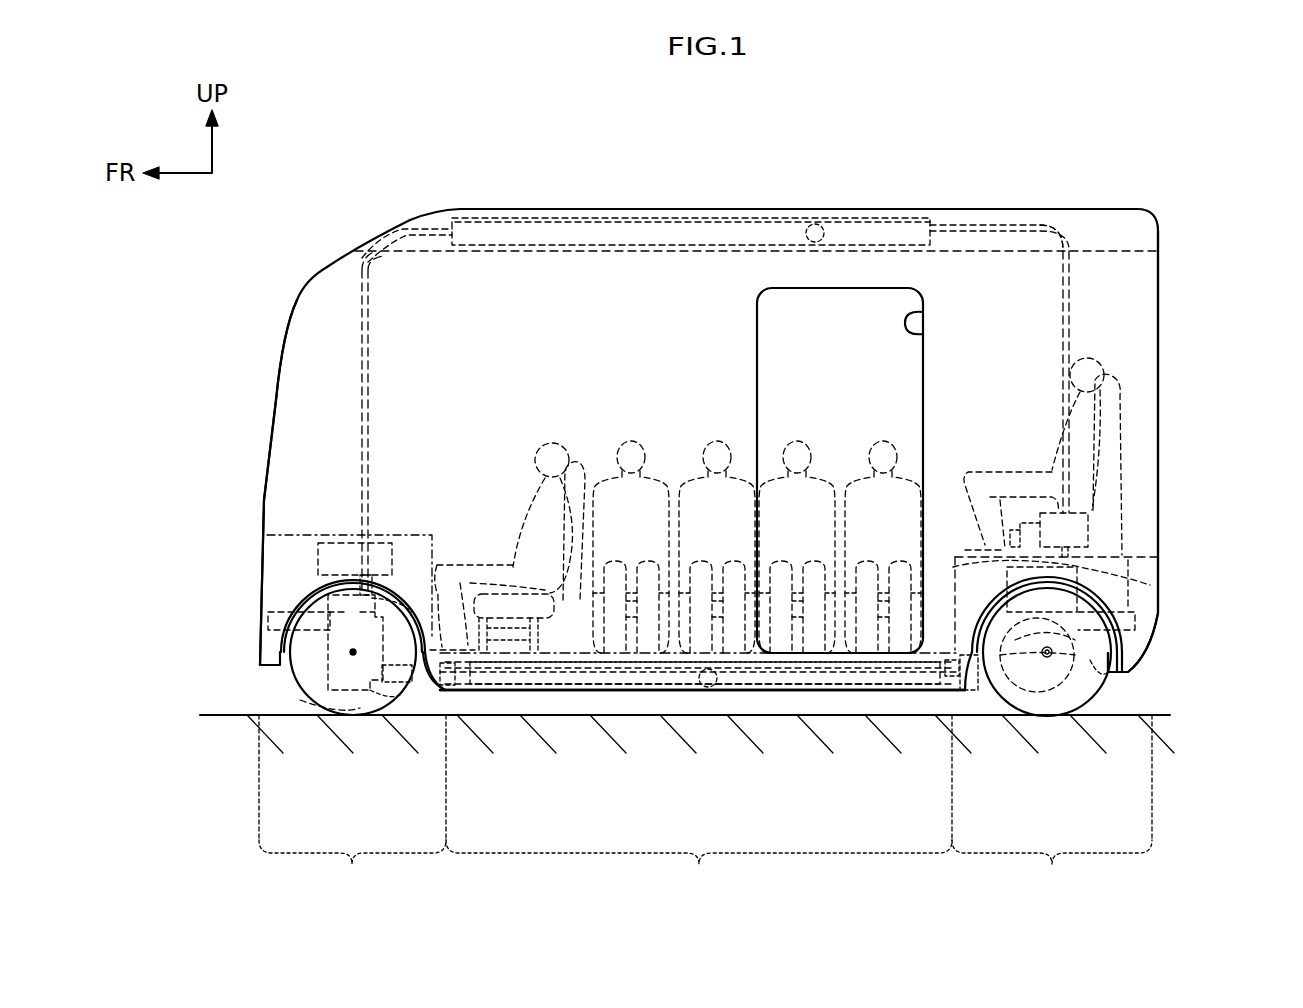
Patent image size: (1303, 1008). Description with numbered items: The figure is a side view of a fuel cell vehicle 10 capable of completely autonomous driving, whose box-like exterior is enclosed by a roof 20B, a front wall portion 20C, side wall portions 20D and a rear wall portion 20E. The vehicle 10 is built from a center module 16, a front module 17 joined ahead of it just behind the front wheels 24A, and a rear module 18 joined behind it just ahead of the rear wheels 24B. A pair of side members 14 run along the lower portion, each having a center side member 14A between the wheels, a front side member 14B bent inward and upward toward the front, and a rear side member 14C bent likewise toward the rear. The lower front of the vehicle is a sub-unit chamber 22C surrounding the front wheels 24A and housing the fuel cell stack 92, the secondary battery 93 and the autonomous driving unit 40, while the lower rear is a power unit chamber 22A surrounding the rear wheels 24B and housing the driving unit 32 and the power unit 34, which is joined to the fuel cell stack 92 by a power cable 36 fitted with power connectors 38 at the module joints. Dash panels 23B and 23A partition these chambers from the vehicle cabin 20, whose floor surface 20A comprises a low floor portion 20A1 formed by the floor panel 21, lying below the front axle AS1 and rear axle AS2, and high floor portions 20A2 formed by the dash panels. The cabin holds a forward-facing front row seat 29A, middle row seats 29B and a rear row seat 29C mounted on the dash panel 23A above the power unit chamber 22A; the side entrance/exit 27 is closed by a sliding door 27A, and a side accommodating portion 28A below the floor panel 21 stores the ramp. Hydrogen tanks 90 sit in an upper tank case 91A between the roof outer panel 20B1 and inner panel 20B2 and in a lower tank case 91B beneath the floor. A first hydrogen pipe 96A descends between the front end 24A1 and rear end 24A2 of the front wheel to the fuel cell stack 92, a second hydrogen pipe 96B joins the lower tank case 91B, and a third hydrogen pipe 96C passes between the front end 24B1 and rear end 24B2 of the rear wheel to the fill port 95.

The vehicle 10 is at (945, 158).
The side member 14 is at (430, 700).
The center side member 14A is at (615, 692).
The front side member 14B is at (320, 545).
The rear side member 14C is at (1100, 680).
The center module 16 is at (699, 867).
The front module 17 is at (352, 807).
The rear module 18 is at (1052, 804).
The vehicle cabin 20 is at (1117, 283).
The floor surface 20A is at (578, 643).
The low floor portion 20A1 is at (513, 650).
The high floor portion 20A2 is at (1105, 545).
The roof 20B is at (650, 208).
The outer panel 20B1 is at (590, 208).
The inner panel 20B2 is at (648, 268).
The front wall portion 20C is at (268, 480).
The side wall portion 20D is at (985, 275).
The rear wall portion 20E is at (1158, 318).
The floor panel 21 is at (550, 692).
The power unit chamber 22A is at (1150, 620).
The sub-unit chamber 22C is at (278, 553).
The dash panel 23A is at (1125, 560).
The dash panel 23B is at (270, 538).
The front wheel 24A is at (307, 680).
The front end of front wheel 24A1 is at (285, 638).
The rear end of front wheel 24A2 is at (420, 620).
The rear wheel 24B is at (995, 690).
The front end of rear wheel 24B1 is at (968, 692).
The rear end of rear wheel 24B2 is at (1080, 692).
The side entrance/exit 27 is at (920, 332).
The sliding door 27A is at (885, 375).
The side accommodating portion 28A is at (833, 692).
The front row seat 29A is at (572, 462).
The middle row seat 29B is at (688, 455).
The rear row seat 29C is at (1097, 390).
The driving unit 32 is at (1045, 685).
The power unit 34 is at (1108, 597).
The power cable 36 is at (878, 660).
The power connector 38 is at (452, 682).
The autonomous driving unit 40 is at (398, 545).
The hydrogen tank 90 is at (812, 225).
The upper tank case 91A is at (860, 220).
The lower tank case 91B is at (758, 692).
The fuel cell stack 92 is at (345, 700).
The secondary battery 93 is at (400, 590).
The fill port 95 is at (1040, 513).
The first hydrogen pipe 96A is at (400, 225).
The second hydrogen pipe 96B is at (395, 690).
The third hydrogen pipe 96C is at (1078, 237).
The axle of front wheels AS1 is at (353, 655).
The axle of rear wheels AS2 is at (1040, 648).